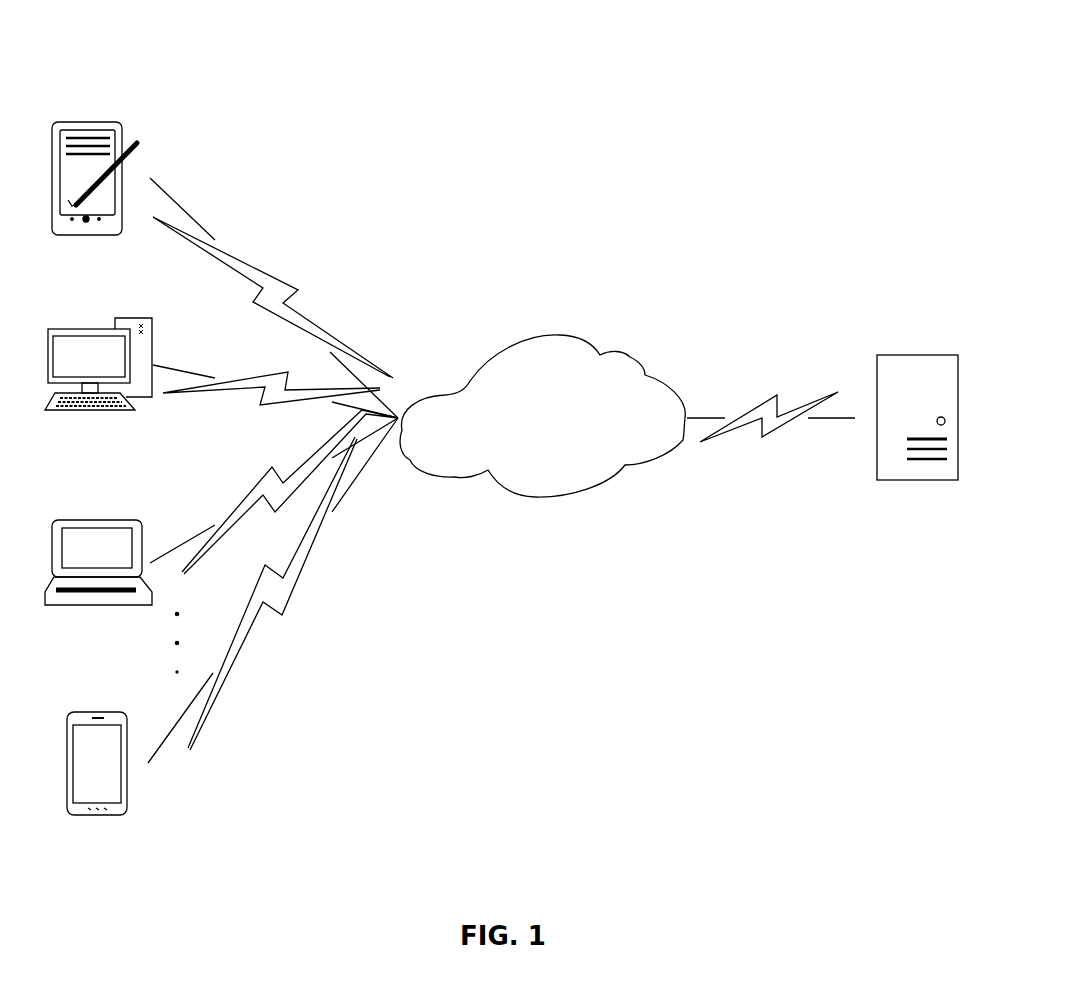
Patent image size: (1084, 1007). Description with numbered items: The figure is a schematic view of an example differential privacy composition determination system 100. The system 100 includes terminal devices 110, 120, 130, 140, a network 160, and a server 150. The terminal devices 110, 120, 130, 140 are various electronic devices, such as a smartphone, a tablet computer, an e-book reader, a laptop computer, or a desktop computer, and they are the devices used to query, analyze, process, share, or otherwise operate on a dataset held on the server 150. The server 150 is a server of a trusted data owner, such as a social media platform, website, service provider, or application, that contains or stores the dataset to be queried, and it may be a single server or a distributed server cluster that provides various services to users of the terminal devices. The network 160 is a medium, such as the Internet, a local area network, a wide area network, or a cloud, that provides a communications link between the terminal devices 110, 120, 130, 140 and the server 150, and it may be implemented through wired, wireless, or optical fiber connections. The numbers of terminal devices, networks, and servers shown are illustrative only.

The differential privacy composition determination system 100 is at (576, 89).
The terminal device 110 is at (118, 122).
The terminal device 120 is at (80, 328).
The terminal device 130 is at (88, 520).
The terminal device 140 is at (92, 712).
The server 150 is at (925, 355).
The network 160 is at (560, 335).